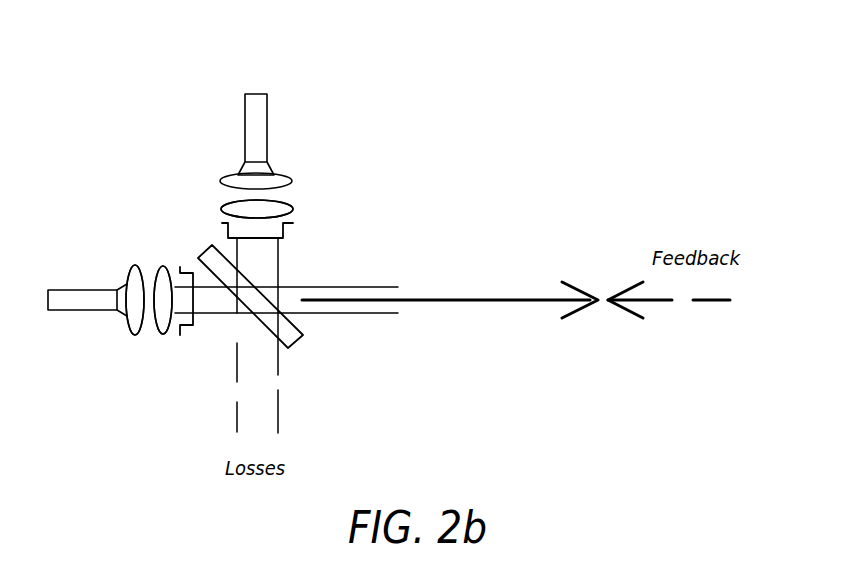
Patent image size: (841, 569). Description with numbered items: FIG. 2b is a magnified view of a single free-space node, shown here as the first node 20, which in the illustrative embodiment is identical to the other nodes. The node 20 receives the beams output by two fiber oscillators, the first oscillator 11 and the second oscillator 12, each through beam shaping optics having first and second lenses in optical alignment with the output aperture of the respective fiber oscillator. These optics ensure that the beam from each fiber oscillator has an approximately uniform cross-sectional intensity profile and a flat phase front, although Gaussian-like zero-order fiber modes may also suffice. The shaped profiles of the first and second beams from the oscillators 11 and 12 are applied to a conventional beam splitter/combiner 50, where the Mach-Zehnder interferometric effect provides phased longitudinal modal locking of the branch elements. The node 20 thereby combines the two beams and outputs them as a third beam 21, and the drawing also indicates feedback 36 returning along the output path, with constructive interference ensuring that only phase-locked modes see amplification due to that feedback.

The first oscillator 11 is at (243, 102).
The second oscillator 12 is at (77, 311).
The first free-space node 20 is at (558, 147).
The third beam 21 is at (508, 302).
The feedback 36 is at (710, 302).
The beam splitter/combiner 50 is at (293, 343).